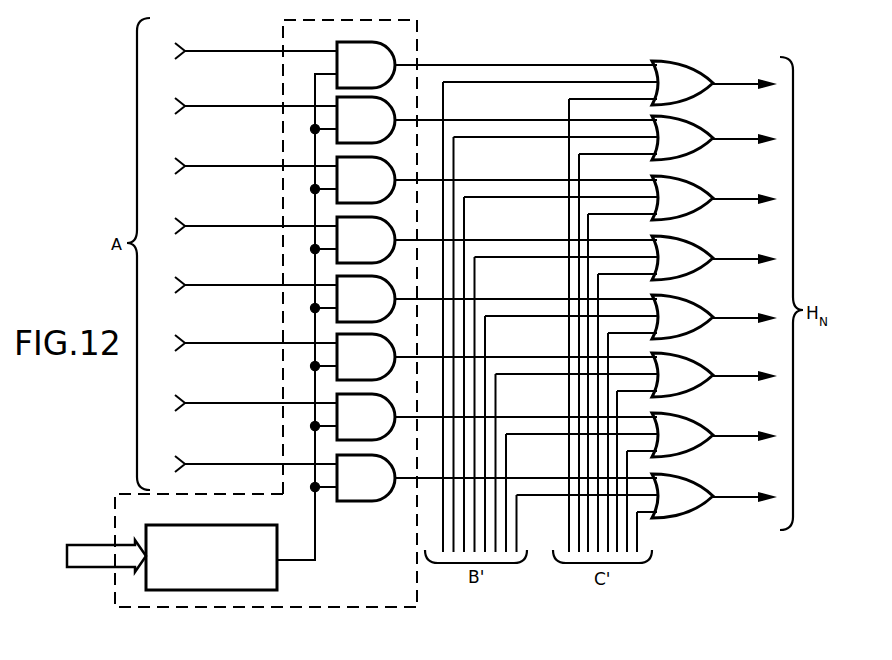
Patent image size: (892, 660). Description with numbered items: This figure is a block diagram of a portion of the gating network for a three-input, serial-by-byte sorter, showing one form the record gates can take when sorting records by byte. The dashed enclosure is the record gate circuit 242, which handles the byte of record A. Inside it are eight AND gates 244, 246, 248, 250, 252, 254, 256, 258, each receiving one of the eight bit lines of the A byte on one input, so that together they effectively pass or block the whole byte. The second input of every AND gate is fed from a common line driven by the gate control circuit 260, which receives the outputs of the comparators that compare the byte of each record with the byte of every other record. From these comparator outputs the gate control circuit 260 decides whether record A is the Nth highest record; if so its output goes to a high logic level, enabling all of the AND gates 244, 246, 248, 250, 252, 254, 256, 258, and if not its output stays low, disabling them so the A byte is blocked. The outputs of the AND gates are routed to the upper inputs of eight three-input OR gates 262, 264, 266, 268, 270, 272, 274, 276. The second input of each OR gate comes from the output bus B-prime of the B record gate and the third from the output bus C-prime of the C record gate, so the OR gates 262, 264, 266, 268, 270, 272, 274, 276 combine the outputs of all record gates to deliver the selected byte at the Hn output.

The record gate circuit 242 is at (417, 610).
The AND gate 244 is at (350, 75).
The AND gate 246 is at (350, 130).
The AND gate 248 is at (350, 190).
The AND gate 250 is at (350, 250).
The AND gate 252 is at (350, 309).
The AND gate 254 is at (350, 367).
The AND gate 256 is at (350, 427).
The AND gate 258 is at (350, 488).
The gate control circuit 260 is at (201, 535).
The OR gate 262 is at (668, 93).
The OR gate 264 is at (668, 148).
The OR gate 266 is at (668, 208).
The OR gate 268 is at (668, 268).
The OR gate 270 is at (668, 327).
The OR gate 272 is at (668, 385).
The OR gate 274 is at (668, 445).
The OR gate 276 is at (668, 506).